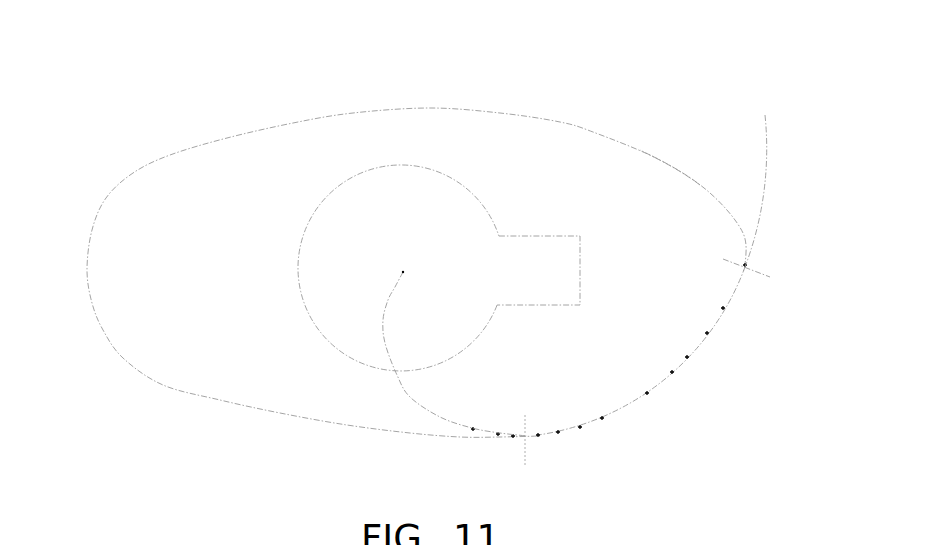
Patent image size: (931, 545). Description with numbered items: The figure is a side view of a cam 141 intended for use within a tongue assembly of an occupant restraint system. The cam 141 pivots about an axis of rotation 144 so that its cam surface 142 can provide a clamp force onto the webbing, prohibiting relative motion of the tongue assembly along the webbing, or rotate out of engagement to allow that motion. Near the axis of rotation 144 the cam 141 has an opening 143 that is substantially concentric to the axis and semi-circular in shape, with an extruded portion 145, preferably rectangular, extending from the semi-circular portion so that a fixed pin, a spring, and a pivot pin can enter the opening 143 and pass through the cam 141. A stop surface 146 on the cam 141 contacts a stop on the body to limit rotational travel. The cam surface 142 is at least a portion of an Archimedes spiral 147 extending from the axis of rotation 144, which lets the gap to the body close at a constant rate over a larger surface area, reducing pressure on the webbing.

The cam 141 is at (186, 110).
The cam surface 142 is at (674, 368).
The opening 143 is at (345, 254).
The axis of rotation 144 is at (405, 273).
The extruded portion 145 is at (551, 236).
The stop surface 146 is at (655, 160).
The Archimedes spiral 147 is at (768, 143).